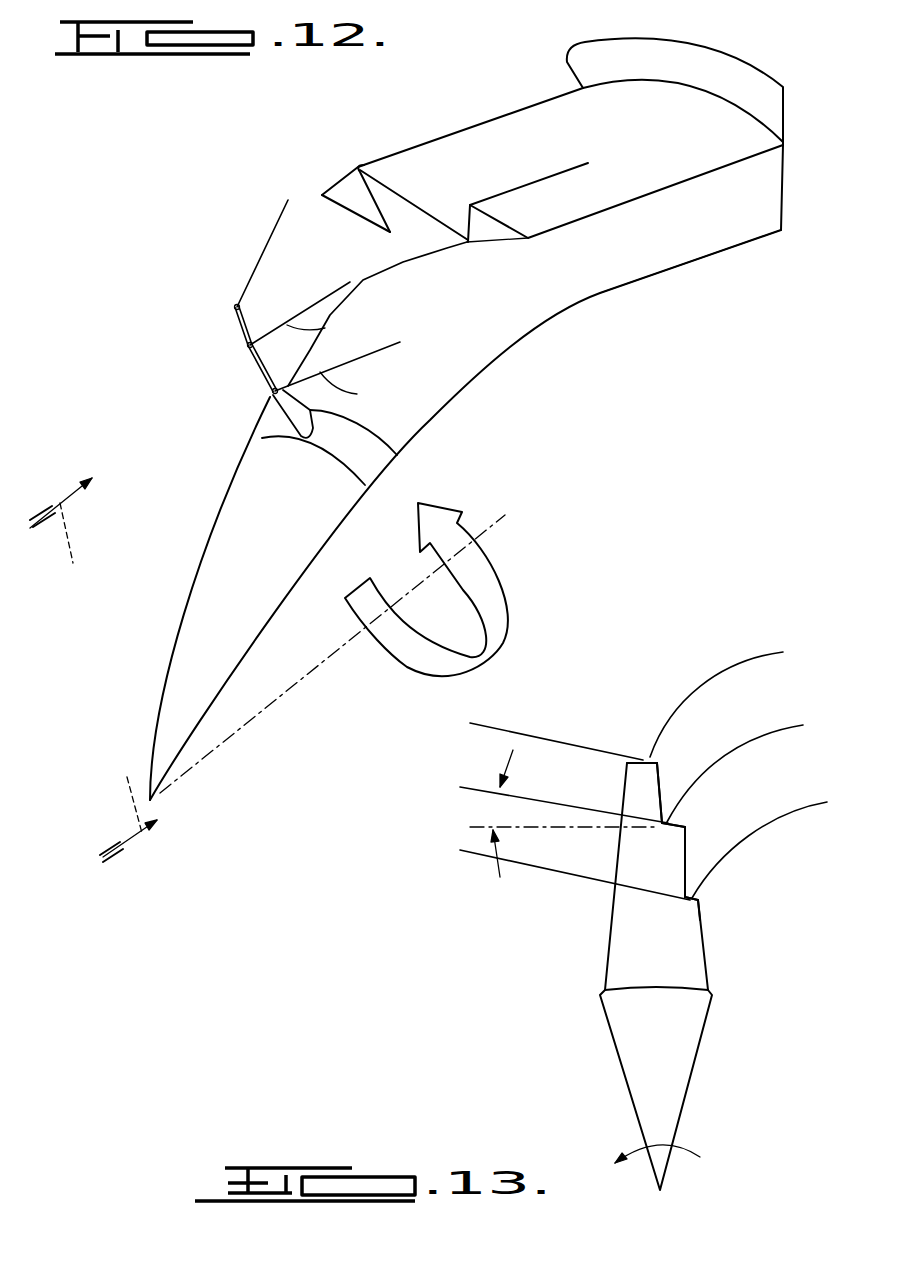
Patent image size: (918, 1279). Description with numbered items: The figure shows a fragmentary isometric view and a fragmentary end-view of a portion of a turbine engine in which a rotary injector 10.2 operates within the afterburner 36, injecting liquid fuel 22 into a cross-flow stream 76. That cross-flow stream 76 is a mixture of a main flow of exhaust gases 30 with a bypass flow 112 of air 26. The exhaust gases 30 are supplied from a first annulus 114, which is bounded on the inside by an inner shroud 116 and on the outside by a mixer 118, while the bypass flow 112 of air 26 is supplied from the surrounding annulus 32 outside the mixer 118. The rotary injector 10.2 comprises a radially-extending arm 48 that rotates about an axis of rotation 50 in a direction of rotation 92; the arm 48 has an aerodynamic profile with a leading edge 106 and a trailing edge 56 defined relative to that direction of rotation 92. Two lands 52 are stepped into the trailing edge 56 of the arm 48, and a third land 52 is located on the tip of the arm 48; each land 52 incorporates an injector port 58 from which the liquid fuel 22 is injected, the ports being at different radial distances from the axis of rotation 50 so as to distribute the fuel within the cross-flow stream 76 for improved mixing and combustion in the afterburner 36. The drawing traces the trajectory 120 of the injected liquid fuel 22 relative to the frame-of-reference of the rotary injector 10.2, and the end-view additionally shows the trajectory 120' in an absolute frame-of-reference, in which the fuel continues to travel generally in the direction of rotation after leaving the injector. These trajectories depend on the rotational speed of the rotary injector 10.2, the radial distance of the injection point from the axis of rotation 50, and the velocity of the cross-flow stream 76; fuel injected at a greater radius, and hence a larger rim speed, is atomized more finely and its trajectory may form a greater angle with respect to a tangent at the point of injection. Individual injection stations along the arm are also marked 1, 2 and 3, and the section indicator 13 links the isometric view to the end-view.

In FIG. 12, the rotary injector 10.2 is at (233, 157).
In FIG. 12, the bypass flow 112 is at (265, 168).
In FIG. 12, the cross-flow stream 76 is at (187, 270).
In FIG. 12, the air 26 is at (541, 95).
In FIG. 12, the surrounding annulus 32 is at (684, 76).
In FIG. 12, the mixer 118 is at (622, 203).
In FIG. 12, the inner shroud 116 is at (618, 291).
In FIG. 12, the first annulus 114 is at (517, 253).
In FIG. 12, the exhaust gases 30 is at (330, 267).
In FIG. 12, the liquid fuel 22 is at (265, 250).
In FIG. 12, the trajectory 120 is at (344, 310).
In FIG. 13, the trajectory 120 is at (765, 745).
In FIG. 12, the afterburner 36 is at (502, 387).
In FIG. 12, the third canard segment 3 is at (222, 307).
In FIG. 12, the second canard segment 2 is at (233, 345).
In FIG. 12, the first canard segment 1 is at (263, 392).
In FIG. 12, the direction of rotation 92 is at (487, 585).
In FIG. 12, the axis of rotation 50 is at (307, 665).
In FIG. 12, the section line 13- 13 is at (131, 651).
In FIG. 13, the trajectory in an absolute frame-of-reference 120' is at (535, 789).
In FIG. 13, the injector port 58 is at (628, 740).
In FIG. 13, the land 52 is at (653, 755).
In FIG. 13, the trailing edge 56 is at (727, 915).
In FIG. 13, the arm 48 is at (613, 910).
In FIG. 13, the leading edge 106 is at (608, 957).